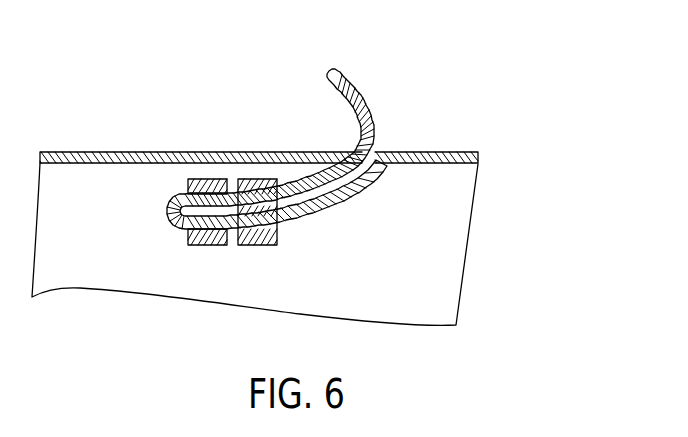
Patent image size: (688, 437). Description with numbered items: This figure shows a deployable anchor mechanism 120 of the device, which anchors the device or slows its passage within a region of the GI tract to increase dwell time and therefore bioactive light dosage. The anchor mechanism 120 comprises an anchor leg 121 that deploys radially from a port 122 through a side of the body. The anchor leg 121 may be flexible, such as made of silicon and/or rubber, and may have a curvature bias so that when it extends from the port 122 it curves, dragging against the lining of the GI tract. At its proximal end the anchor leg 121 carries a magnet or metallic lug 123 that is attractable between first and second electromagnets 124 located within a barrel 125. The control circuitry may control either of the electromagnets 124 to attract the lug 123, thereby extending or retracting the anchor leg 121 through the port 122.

The deployable anchor mechanism 120 is at (492, 70).
The anchor leg 121 is at (352, 92).
The port 122 is at (282, 152).
The magnet or metallic lug 123 is at (274, 208).
The electromagnets 124 is at (213, 239).
The barrel 125 is at (172, 222).